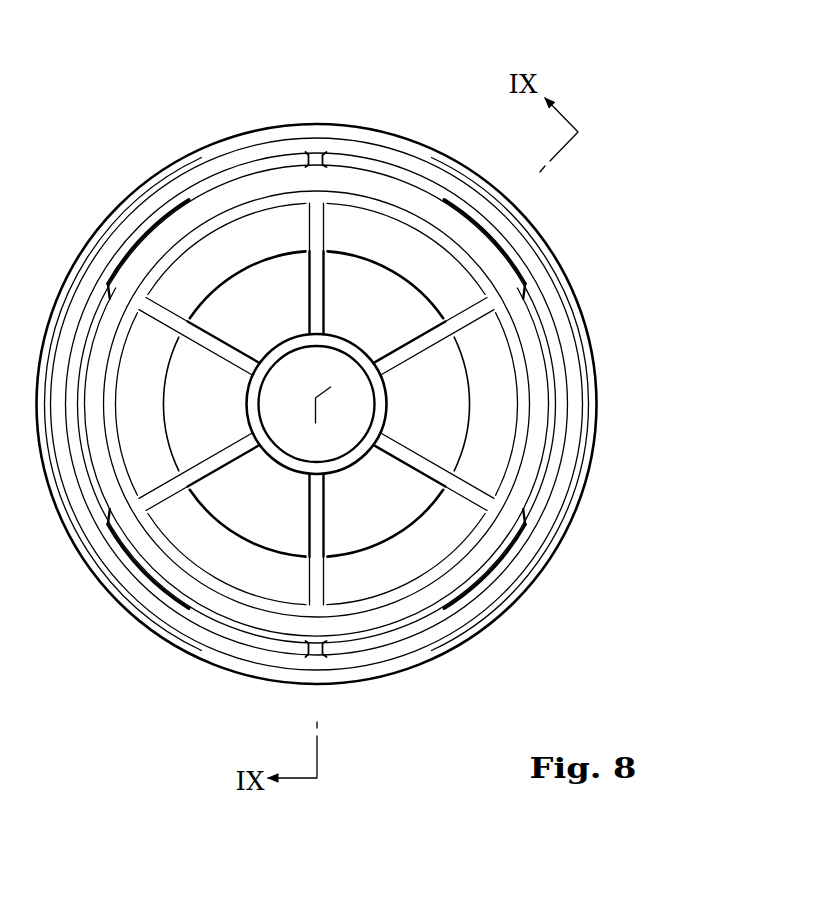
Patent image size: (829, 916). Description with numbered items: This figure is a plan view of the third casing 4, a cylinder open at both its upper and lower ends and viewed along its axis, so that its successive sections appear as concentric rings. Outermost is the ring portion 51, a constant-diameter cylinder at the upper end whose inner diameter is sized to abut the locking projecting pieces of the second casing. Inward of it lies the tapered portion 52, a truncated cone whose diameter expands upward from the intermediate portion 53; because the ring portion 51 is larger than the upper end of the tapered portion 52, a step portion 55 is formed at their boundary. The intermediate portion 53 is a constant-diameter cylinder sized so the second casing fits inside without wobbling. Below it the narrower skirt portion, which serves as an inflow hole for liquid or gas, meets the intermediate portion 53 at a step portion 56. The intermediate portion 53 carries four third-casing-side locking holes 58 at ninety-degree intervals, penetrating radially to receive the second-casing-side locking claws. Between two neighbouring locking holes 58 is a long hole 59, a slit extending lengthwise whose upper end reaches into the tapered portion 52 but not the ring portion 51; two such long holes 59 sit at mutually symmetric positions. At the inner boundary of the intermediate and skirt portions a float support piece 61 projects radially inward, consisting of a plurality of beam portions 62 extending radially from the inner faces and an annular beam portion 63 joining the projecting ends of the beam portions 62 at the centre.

The third casing 4 is at (398, 70).
The ring portion 51 is at (209, 150).
The tapered portion 52 is at (266, 150).
The intermediate portion 53 is at (206, 185).
The step portion 55 is at (307, 138).
The step portion 56 is at (541, 375).
The third-casing-side locking hole 58 is at (138, 235).
The long hole 59 is at (326, 160).
The float support piece 61 is at (419, 364).
The beam portion 62 is at (409, 347).
The annular beam portion 63 is at (263, 376).